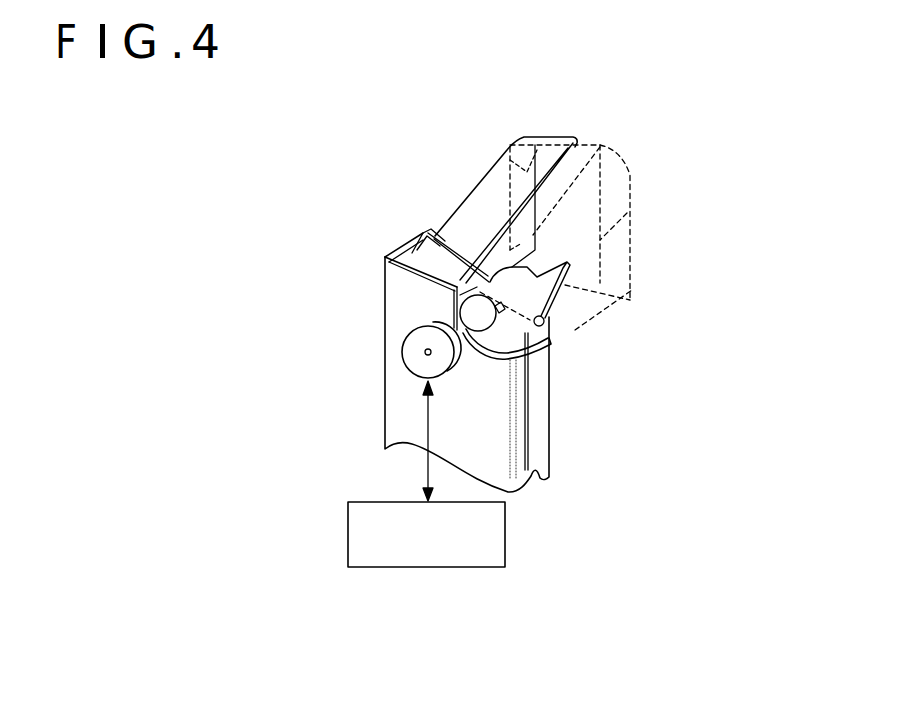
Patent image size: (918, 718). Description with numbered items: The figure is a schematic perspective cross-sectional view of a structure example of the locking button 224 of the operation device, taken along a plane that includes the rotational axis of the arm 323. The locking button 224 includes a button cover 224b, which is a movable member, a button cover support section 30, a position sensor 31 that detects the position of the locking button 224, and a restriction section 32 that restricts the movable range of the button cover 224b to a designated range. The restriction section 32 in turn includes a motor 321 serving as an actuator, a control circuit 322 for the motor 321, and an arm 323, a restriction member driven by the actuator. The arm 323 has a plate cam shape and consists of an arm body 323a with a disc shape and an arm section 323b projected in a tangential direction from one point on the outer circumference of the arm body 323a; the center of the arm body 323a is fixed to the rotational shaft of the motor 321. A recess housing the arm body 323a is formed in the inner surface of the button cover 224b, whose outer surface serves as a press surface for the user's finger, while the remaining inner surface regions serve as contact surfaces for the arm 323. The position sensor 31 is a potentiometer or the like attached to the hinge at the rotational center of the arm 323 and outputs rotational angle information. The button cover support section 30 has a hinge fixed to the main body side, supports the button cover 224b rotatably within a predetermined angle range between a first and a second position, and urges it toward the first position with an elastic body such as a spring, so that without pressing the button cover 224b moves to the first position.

The locking button 224 is at (208, 584).
The button cover 224b is at (521, 152).
The position sensor 31 is at (507, 170).
The button cover support section 30 is at (421, 238).
The restriction section 32 is at (541, 265).
The arm 323 is at (619, 285).
The arm body 323a is at (558, 286).
The arm section 323b is at (560, 272).
The motor 321 is at (405, 353).
The control circuit 322 is at (509, 524).